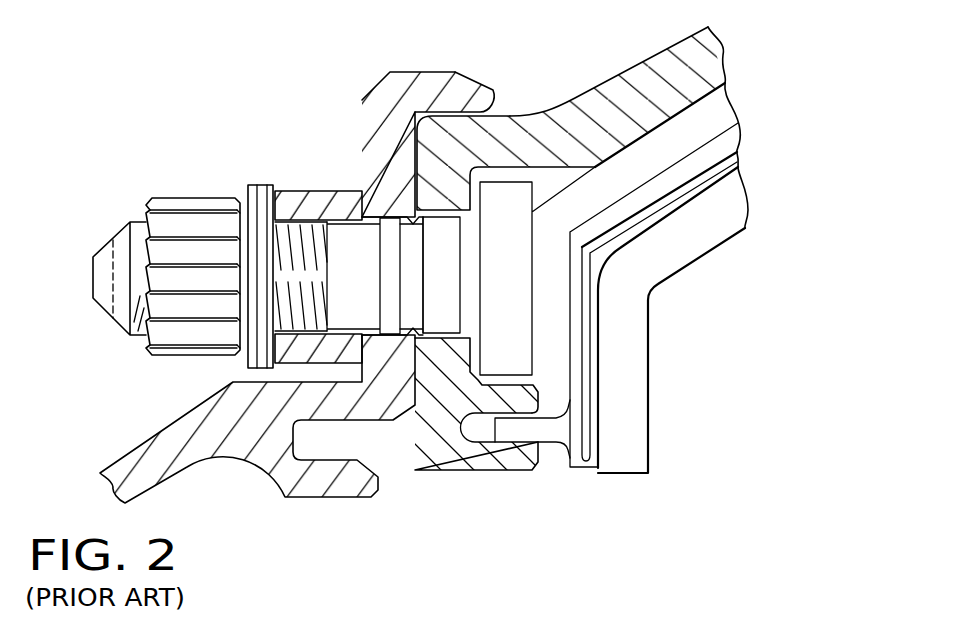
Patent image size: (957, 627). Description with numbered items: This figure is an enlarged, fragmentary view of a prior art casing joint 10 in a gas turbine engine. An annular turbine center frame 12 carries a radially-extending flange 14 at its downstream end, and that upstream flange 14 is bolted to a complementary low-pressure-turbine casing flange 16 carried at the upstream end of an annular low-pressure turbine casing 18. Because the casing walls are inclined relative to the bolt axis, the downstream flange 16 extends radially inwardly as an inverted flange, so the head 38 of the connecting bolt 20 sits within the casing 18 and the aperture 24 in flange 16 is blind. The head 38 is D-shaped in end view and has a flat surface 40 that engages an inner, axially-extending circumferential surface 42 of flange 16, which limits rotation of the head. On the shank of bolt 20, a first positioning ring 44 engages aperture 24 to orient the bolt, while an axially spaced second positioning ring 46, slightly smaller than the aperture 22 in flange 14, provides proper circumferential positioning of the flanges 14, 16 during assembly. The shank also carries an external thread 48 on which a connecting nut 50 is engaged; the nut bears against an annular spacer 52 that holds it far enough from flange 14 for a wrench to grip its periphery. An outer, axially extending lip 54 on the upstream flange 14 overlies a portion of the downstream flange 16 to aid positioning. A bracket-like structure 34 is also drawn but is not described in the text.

The casing joint 10 is at (276, 50).
The turbine center frame 12 is at (140, 452).
The turbine center frame flange 14 is at (388, 97).
The low-pressure-turbine casing flange 16 is at (440, 147).
The low-pressure turbine casing 18 is at (653, 68).
The connecting bolt 20 is at (300, 254).
The aperture 22 is at (375, 326).
The aperture 24 is at (437, 335).
The bracket 34 is at (722, 222).
The head 38 is at (510, 231).
The flat surface 40 is at (518, 388).
The circumferential surface 42 is at (519, 384).
The first positioning ring 44 is at (438, 253).
The second positioning ring 46 is at (392, 233).
The external thread 48 is at (140, 263).
The connecting nut 50 is at (177, 213).
The annular spacer 52 is at (290, 197).
The lip 54 is at (469, 70).